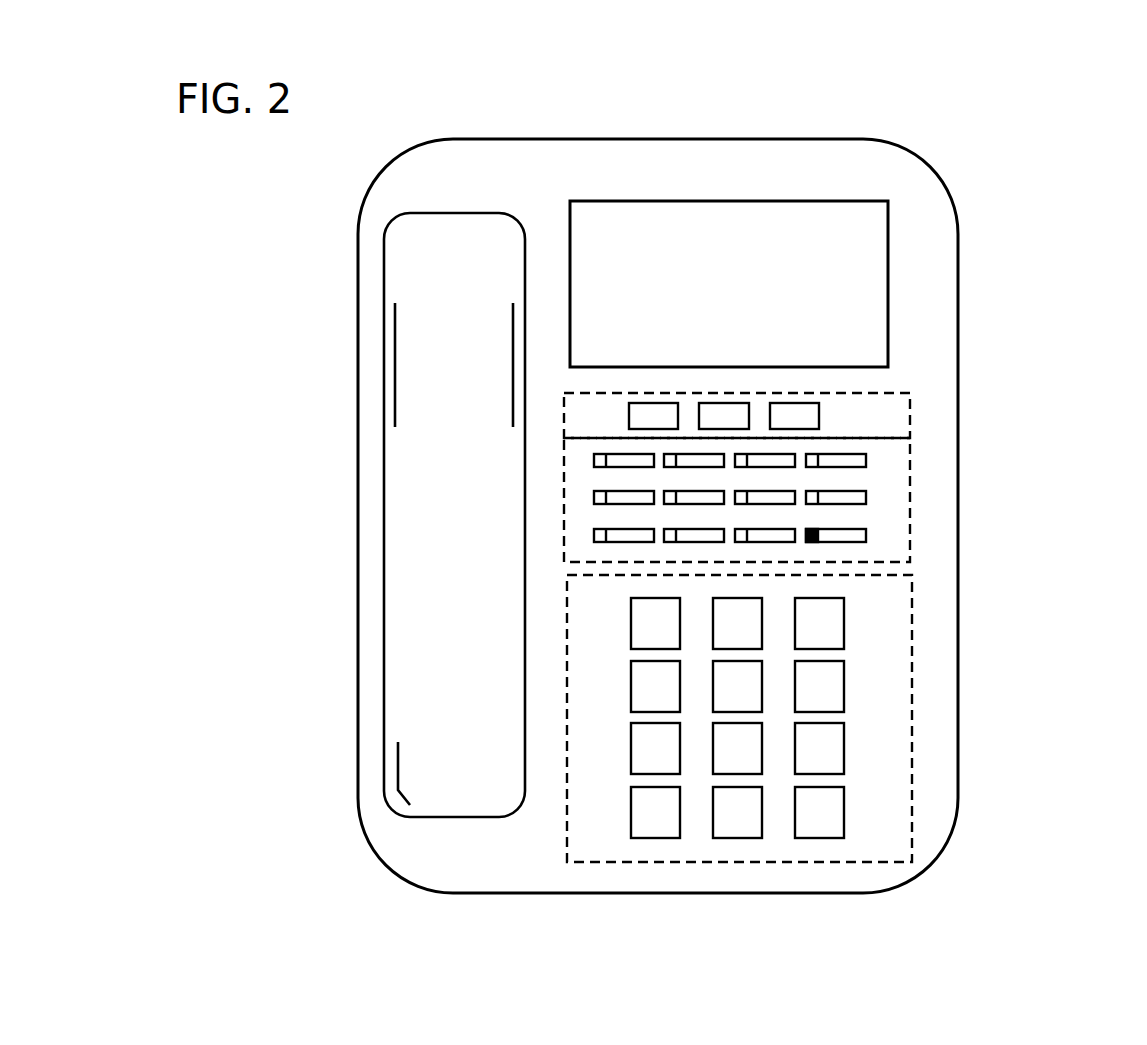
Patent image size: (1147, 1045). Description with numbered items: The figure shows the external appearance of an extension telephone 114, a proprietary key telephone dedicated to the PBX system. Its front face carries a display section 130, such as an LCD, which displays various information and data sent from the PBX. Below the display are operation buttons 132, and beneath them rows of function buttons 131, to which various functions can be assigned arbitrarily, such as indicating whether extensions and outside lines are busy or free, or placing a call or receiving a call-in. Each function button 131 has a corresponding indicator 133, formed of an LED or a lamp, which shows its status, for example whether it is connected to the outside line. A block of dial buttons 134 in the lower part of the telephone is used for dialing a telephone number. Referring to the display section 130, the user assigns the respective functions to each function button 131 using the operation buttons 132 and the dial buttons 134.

The extension telephone 114 is at (744, 138).
The display section 130 is at (888, 240).
The function button 131 is at (866, 540).
The operation button 132 is at (910, 417).
The indicator 133 is at (812, 533).
The dial button 134 is at (912, 751).